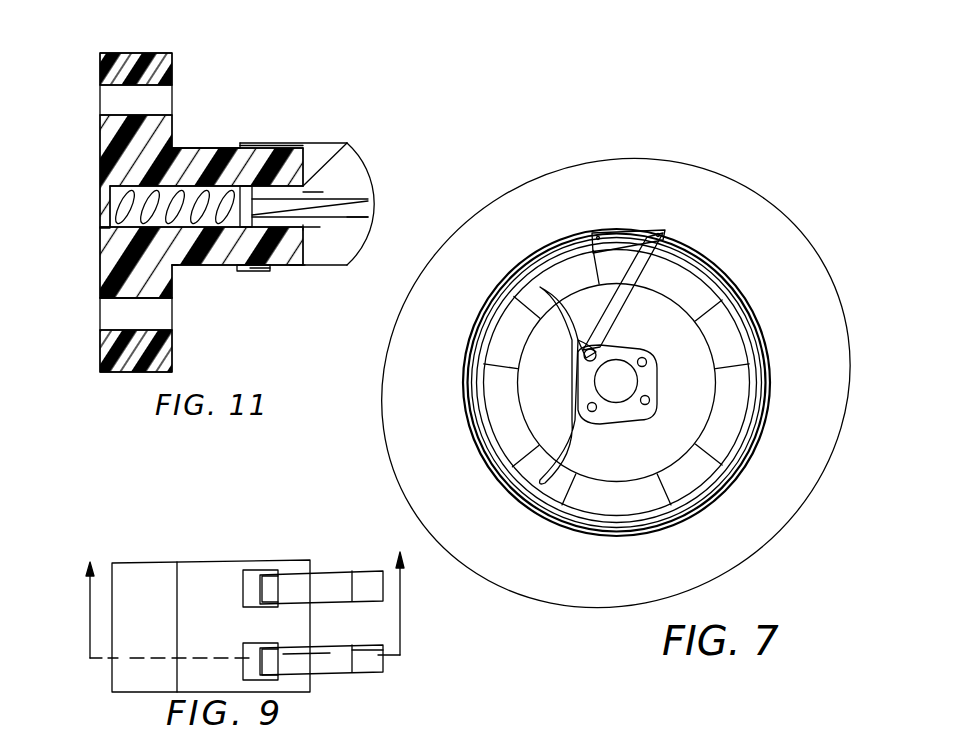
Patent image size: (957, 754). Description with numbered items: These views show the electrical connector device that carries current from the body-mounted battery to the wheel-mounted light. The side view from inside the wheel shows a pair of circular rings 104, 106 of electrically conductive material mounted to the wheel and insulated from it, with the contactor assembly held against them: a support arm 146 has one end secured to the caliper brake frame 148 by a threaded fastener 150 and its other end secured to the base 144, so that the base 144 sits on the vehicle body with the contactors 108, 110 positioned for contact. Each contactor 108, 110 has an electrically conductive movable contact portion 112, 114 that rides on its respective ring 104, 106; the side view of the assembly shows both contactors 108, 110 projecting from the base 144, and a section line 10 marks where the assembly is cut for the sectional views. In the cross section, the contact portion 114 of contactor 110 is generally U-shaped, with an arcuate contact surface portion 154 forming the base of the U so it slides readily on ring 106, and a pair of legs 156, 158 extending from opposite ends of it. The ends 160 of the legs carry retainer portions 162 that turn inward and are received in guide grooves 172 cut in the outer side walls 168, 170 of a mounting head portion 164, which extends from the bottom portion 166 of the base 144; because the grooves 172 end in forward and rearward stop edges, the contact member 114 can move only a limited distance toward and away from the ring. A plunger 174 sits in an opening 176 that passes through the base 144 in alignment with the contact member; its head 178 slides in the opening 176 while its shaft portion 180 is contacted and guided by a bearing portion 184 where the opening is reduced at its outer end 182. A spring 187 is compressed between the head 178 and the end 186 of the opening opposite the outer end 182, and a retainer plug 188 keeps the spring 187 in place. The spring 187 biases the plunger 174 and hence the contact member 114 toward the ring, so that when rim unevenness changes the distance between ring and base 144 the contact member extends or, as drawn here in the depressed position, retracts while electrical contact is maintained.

In FIG. 9, the section line 10- 10 is at (242, 605).
In FIG. 7, the circular ring 104 is at (768, 355).
In FIG. 7, the circular ring 106 is at (757, 313).
In FIG. 9, the contactor 108 is at (310, 572).
In FIG. 9, the contactor 110 is at (310, 677).
In FIG. 9, the movable contact portion 112 is at (367, 580).
In FIG. 11, the movable contact portion 114 is at (347, 143).
In FIG. 9, the movable contact portion 114 is at (375, 665).
In FIG. 11, the base 144 is at (122, 53).
In FIG. 9, the base 144 is at (195, 562).
In FIG. 7, the support arm 146 is at (613, 240).
In FIG. 7, the caliper brake frame 148 is at (700, 317).
In FIG. 7, the threaded fastener 150 is at (633, 347).
In FIG. 11, the contact surface portion 154 is at (347, 143).
In FIG. 9, the contact surface portion 154 is at (372, 648).
In FIG. 11, the leg 156 is at (331, 143).
In FIG. 11, the leg 158 is at (300, 271).
In FIG. 11, the ends of the legs 160 is at (238, 148).
In FIG. 11, the retainer portions 162 is at (248, 148).
In FIG. 11, the mounting head portion 164 is at (215, 150).
In FIG. 11, the bottom portion 166 is at (100, 297).
In FIG. 11, the outer side wall 168 is at (190, 148).
In FIG. 11, the outer side wall 170 is at (202, 315).
In FIG. 11, the guide groove 172 is at (265, 150).
In FIG. 11, the plunger 174 is at (347, 217).
In FIG. 11, the opening 176 is at (323, 192).
In FIG. 11, the head 178 is at (368, 206).
In FIG. 11, the shaft portion 180 is at (370, 193).
In FIG. 11, the outer end 182 is at (303, 227).
In FIG. 11, the bearing portion 184 is at (303, 227).
In FIG. 11, the end of the opening 186 is at (100, 232).
In FIG. 11, the spring 187 is at (104, 182).
In FIG. 11, the retainer plug 188 is at (110, 207).